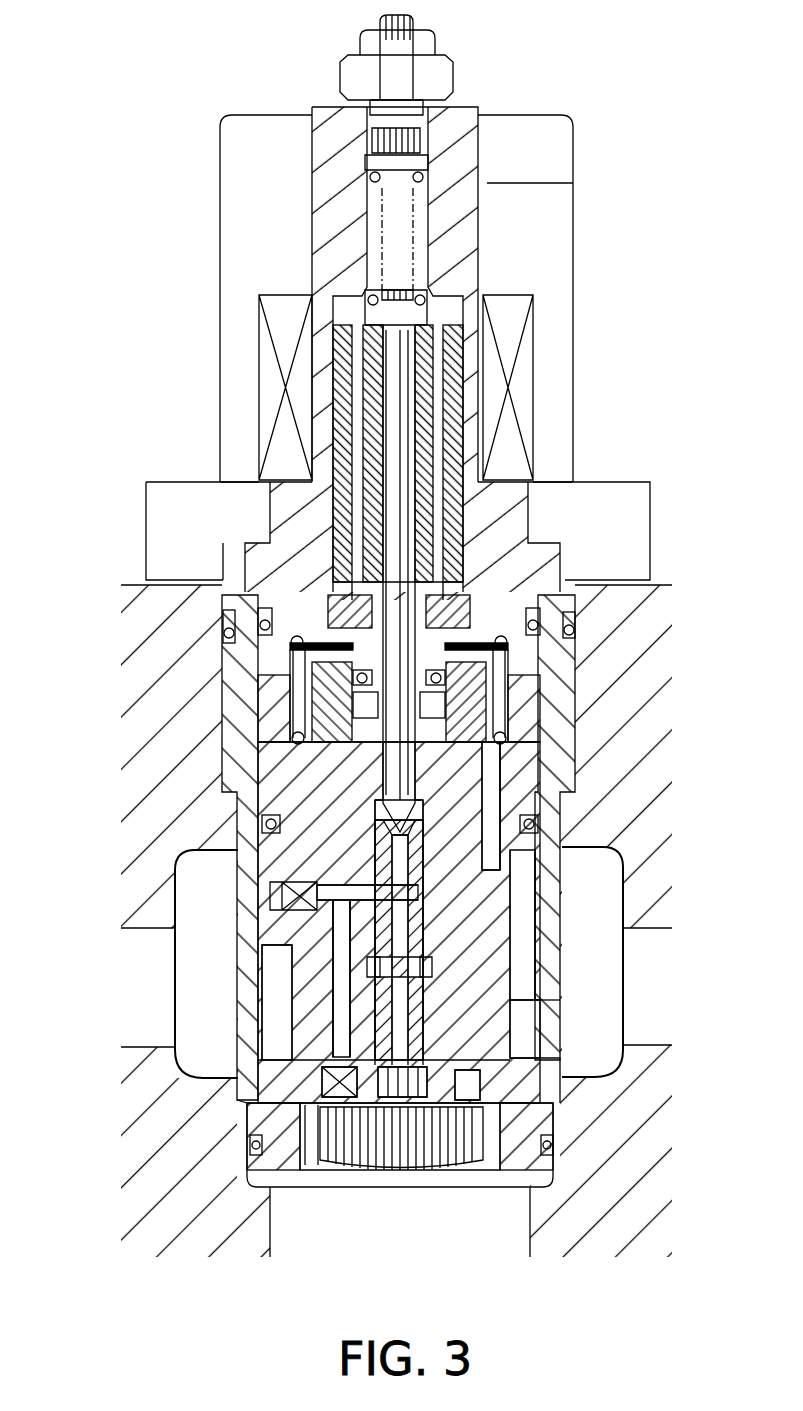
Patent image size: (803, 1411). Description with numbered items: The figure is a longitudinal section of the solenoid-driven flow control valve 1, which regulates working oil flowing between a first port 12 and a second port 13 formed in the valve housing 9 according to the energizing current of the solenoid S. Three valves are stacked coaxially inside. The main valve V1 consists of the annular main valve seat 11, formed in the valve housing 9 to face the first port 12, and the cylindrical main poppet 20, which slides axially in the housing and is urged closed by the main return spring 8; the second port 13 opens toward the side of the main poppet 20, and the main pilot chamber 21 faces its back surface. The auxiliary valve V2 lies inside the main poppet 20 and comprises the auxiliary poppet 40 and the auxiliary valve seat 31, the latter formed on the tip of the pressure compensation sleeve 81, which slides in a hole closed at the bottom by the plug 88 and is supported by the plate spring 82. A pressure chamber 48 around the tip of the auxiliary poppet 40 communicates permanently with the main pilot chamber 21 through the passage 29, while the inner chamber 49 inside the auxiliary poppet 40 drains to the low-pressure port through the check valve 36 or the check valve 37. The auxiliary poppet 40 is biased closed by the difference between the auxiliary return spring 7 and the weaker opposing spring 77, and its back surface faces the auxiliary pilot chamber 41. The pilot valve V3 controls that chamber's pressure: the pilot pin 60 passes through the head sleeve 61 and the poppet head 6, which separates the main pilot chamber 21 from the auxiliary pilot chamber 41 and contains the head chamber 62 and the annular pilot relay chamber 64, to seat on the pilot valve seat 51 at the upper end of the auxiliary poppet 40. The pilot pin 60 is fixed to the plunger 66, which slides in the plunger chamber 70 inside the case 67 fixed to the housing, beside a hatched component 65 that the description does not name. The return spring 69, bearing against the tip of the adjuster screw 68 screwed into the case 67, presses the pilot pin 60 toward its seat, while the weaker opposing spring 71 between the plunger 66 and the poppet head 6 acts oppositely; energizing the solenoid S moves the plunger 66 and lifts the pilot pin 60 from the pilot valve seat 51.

The solenoid-driven flow control valve 1 is at (612, 110).
The poppet head 6 is at (470, 692).
The auxiliary return spring 7 is at (375, 800).
The main return spring 8 is at (570, 660).
The valve housing 9 is at (575, 606).
The main valve seat 11 is at (545, 1187).
The first port 12 is at (485, 1110).
The second port 13 is at (560, 1045).
The main poppet 20 is at (250, 1102).
The main pilot chamber 21 is at (258, 645).
The passage 29 is at (497, 748).
The auxiliary valve seat 31 is at (400, 1010).
The check valve 36 is at (280, 895).
The check valve 37 is at (305, 1100).
The auxiliary poppet 40 is at (380, 945).
The auxiliary pilot chamber 41 is at (395, 830).
The pressure chamber 48 is at (375, 985).
The inner chamber 49 is at (340, 975).
The pilot valve seat 51 is at (545, 818).
The pilot pin 60 is at (400, 408).
The head sleeve 61 is at (222, 608).
The head chamber 62 is at (293, 690).
The pilot relay chamber 64 is at (300, 760).
The armature 65 is at (430, 455).
The plunger 66 is at (455, 360).
The case 67 is at (560, 185).
The adjuster screw 68 is at (415, 70).
The return spring 69 is at (420, 302).
The plunger chamber 70 is at (345, 310).
The opposing spring 71 is at (465, 545).
The opposing spring 77 is at (500, 1115).
The pressure compensation sleeve 81 is at (445, 1090).
The spring 82 is at (378, 1110).
The plug 88 is at (403, 1080).
The solenoid S is at (285, 390).
The main valve V1 is at (312, 1125).
The auxiliary valve V2 is at (420, 967).
The pilot valve V3 is at (420, 812).